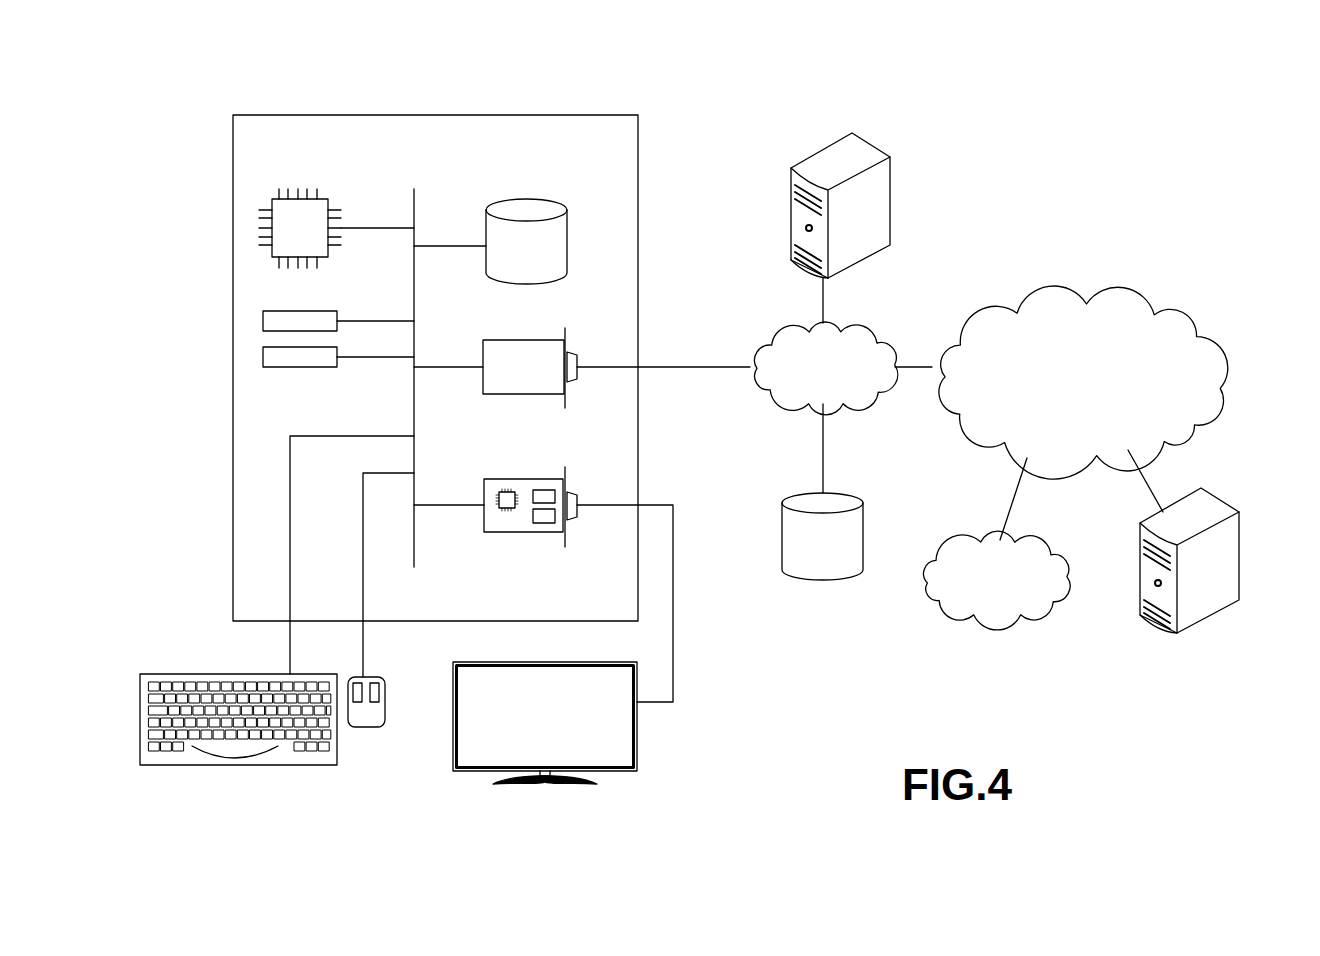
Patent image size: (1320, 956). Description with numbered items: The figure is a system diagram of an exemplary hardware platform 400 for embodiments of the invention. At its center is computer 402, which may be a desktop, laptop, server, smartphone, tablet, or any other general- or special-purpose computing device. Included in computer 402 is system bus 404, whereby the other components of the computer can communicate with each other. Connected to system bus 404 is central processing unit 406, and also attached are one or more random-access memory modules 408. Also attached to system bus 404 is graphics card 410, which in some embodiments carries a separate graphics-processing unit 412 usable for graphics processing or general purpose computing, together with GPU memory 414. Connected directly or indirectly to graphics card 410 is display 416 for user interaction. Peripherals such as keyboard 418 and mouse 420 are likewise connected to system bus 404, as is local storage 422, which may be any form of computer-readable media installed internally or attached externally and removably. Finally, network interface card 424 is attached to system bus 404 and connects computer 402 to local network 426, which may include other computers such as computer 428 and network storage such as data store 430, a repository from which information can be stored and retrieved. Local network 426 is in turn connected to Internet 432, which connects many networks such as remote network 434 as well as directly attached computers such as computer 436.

The hardware platform 400 is at (302, 82).
The computer 402 is at (593, 115).
The system bus 404 is at (416, 200).
The central processing unit 406 is at (322, 197).
The random-access memory modules 408 is at (337, 347).
The graphics card 410 is at (484, 490).
The graphics-processing unit 412 is at (507, 508).
The GPU memory 414 is at (543, 523).
The display 416 is at (637, 752).
The keyboard 418 is at (240, 765).
The mouse 420 is at (365, 727).
The local storage 422 is at (567, 228).
The network interface card 424 is at (483, 350).
The local network 426 is at (876, 323).
The computer 428 is at (875, 145).
The data store 430 is at (855, 493).
The Internet 432 is at (1125, 295).
The remote network 434 is at (1050, 540).
The computer 436 is at (1215, 497).